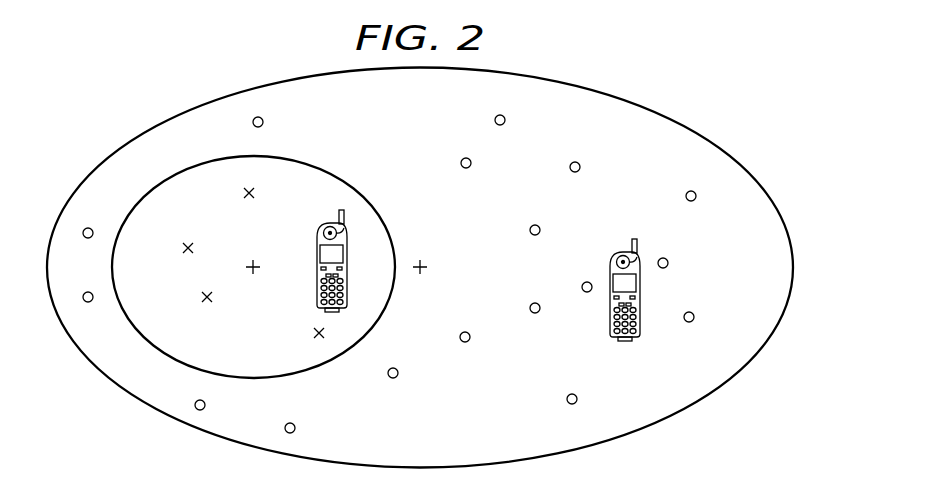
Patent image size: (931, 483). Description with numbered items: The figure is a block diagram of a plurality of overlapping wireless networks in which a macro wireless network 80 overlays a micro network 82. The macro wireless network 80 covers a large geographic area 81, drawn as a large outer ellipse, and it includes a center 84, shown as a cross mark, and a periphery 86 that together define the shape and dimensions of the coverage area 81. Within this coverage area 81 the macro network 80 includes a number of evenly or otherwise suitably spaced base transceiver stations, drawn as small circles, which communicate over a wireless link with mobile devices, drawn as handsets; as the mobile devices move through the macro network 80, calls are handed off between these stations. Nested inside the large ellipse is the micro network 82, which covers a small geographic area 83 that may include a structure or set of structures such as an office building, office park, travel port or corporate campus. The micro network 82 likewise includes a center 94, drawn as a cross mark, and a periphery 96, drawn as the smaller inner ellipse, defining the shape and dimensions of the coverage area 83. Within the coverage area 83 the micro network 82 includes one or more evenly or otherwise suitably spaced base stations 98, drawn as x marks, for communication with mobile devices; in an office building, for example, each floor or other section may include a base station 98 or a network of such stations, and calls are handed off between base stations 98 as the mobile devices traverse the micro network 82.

The macro wireless network 80 is at (577, 80).
The coverage area 81 is at (540, 438).
The micro network 82 is at (324, 161).
The coverage area 83 is at (208, 353).
The center 84 is at (424, 263).
The periphery 86 is at (262, 85).
The center 94 is at (250, 262).
The periphery 96 is at (203, 162).
The base station 98 is at (181, 249).